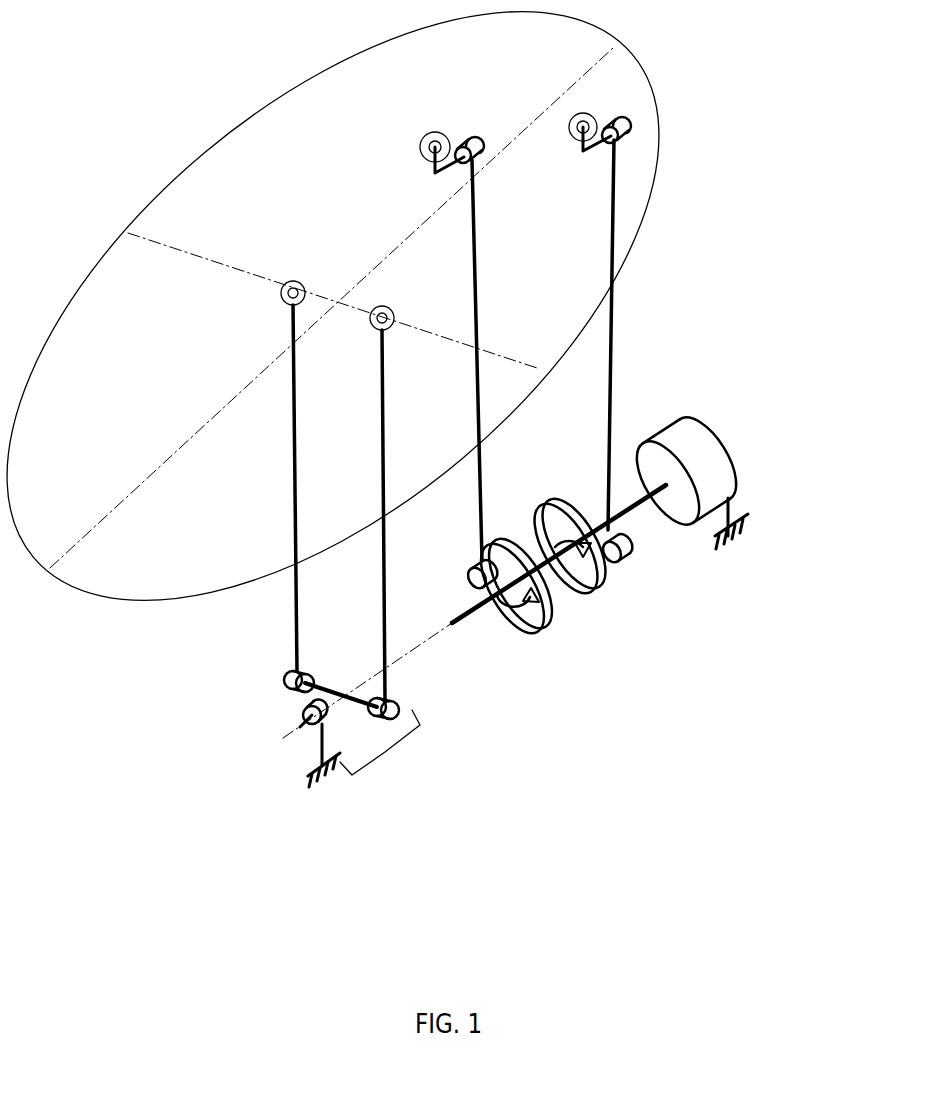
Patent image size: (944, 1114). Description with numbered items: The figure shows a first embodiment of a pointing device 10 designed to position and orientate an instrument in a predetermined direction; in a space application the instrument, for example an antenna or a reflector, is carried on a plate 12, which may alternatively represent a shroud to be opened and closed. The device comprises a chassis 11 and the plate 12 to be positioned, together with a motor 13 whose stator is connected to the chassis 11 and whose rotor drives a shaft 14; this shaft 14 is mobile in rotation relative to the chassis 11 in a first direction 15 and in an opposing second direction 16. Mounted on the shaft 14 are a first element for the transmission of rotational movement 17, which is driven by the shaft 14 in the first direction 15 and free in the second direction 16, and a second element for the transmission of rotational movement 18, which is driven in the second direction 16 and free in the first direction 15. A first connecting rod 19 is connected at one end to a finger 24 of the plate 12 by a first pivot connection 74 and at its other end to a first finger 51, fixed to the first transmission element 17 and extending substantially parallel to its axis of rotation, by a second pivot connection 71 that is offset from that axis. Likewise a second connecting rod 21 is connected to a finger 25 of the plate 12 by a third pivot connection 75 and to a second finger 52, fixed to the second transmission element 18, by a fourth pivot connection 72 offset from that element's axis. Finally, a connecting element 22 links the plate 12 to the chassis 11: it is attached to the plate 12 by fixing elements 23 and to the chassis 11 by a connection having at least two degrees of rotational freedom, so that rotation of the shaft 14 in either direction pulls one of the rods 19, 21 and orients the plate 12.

The pointing device 10 is at (101, 33).
The chassis 11 is at (743, 514).
The plate 12 is at (661, 163).
The motor 13 is at (737, 467).
The shaft 14 is at (641, 505).
The first direction 15 is at (511, 625).
The second direction 16 is at (571, 502).
The first element for the transmission of rotational movement 17 is at (544, 631).
The second element for the transmission of rotational movement 18 is at (601, 588).
The first connecting rod 19 is at (478, 263).
The second connecting rod 21 is at (620, 360).
The connecting element 22 is at (385, 752).
The fixing elements 23 is at (376, 306).
The finger 24 is at (435, 132).
The finger 25 is at (594, 116).
The first finger 51 is at (466, 572).
The second finger 52 is at (630, 541).
The second pivot connection 71 is at (471, 600).
The fourth pivot connection 72 is at (619, 556).
The first pivot connection 74 is at (466, 140).
The third pivot connection 75 is at (610, 117).